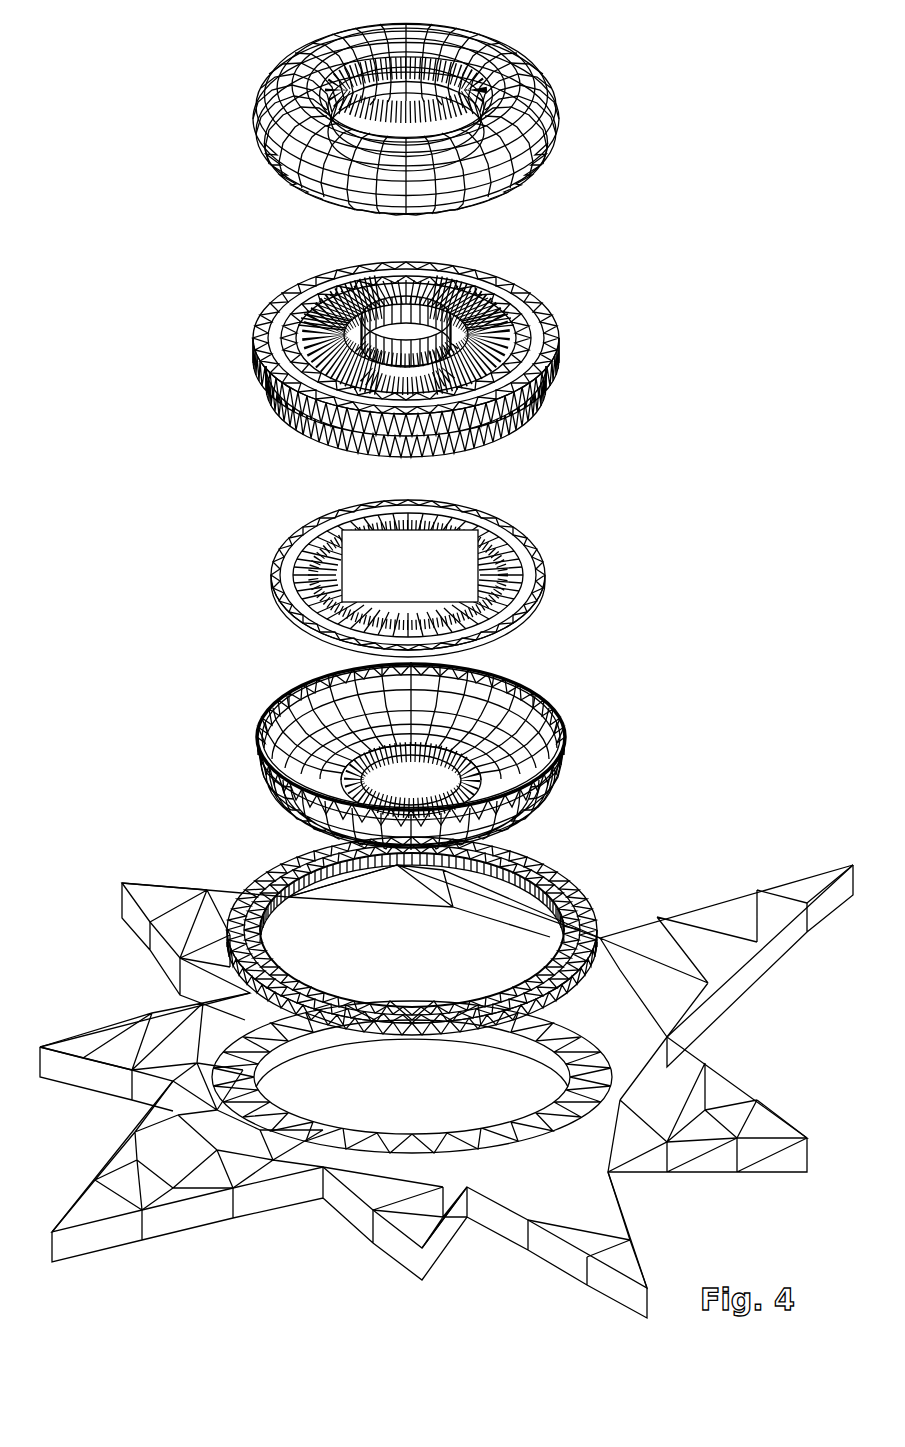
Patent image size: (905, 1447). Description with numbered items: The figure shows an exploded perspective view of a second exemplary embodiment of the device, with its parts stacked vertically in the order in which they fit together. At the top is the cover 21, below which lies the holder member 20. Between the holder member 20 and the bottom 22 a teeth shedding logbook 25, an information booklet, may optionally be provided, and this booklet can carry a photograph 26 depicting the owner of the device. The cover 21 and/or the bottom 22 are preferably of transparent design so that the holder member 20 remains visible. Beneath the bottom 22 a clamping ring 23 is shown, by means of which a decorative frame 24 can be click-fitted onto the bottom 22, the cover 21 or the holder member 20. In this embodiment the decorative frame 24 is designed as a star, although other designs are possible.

The holder member 20 is at (560, 340).
The cover 21 is at (558, 127).
The bottom 22 is at (555, 775).
The clamping ring 23 is at (565, 882).
The decorative frame 24 is at (808, 885).
The teeth shedding logbook 25 is at (545, 571).
The photograph 26 is at (423, 588).